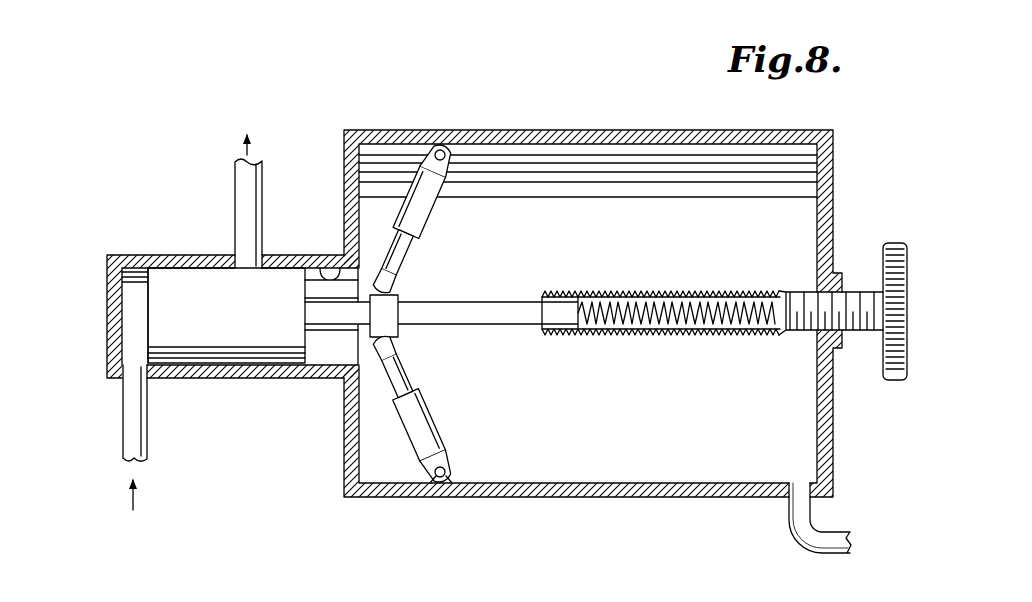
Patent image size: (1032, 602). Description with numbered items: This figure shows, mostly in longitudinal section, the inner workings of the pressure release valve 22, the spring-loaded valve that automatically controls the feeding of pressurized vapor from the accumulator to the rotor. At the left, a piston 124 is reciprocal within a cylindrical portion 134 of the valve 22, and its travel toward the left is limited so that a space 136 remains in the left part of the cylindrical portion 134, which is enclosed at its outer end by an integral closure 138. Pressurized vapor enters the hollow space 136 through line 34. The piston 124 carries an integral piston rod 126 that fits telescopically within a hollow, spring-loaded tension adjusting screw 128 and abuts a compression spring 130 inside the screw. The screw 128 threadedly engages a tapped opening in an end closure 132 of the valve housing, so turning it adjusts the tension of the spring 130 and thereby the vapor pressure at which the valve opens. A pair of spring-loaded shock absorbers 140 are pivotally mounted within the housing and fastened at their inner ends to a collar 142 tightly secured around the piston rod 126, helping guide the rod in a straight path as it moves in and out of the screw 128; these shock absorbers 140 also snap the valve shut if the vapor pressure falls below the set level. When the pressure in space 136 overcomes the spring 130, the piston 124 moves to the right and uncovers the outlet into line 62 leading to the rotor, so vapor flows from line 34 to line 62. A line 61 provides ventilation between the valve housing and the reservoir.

The pressure release valve 22 is at (581, 127).
The line 34 is at (130, 427).
The line 61 is at (795, 533).
The line 62 is at (242, 181).
The piston 124 is at (212, 345).
The piston rod 126 is at (493, 313).
The tension adjusting screw 128 is at (810, 302).
The compression spring 130 is at (678, 250).
The end closure 132 is at (822, 408).
The cylindrical portion 134 is at (332, 270).
The space 136 is at (135, 268).
The integral closure 138 is at (113, 322).
The spring-loaded shock absorbers 140 is at (422, 192).
The collar 142 is at (395, 300).